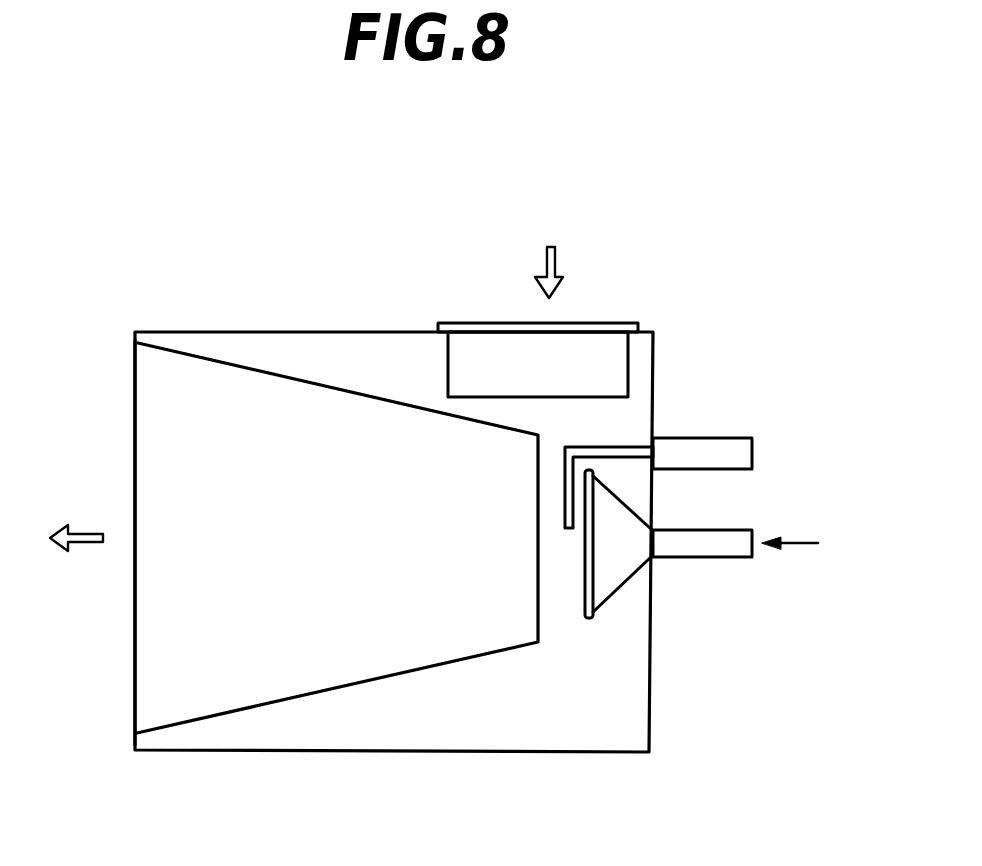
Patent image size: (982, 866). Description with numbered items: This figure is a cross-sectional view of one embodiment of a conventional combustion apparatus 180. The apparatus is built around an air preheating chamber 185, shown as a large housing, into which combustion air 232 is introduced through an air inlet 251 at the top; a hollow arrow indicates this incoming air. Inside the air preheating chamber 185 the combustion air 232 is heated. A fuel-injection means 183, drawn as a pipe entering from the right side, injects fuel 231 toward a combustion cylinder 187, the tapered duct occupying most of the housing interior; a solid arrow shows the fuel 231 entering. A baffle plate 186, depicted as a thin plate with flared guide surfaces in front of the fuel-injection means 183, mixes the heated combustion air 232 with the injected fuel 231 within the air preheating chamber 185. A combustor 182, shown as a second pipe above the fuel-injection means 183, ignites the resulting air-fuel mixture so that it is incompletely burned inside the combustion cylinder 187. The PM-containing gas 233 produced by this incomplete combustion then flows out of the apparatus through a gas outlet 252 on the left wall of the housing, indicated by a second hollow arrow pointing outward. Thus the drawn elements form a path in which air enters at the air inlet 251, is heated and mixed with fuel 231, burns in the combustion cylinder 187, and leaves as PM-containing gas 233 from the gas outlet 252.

The combustion apparatus 180 is at (712, 262).
The combustor 182 is at (728, 438).
The fuel-injection means 183 is at (752, 530).
The air preheating chamber 185 is at (422, 727).
The baffle plate 186 is at (615, 568).
The combustion cylinder 187 is at (246, 390).
The air inlet 251 is at (477, 322).
The gas outlet 252 is at (135, 467).
The fuel 231 is at (800, 544).
The combustion air 232 is at (558, 260).
The PM-containing gas 233 is at (80, 546).